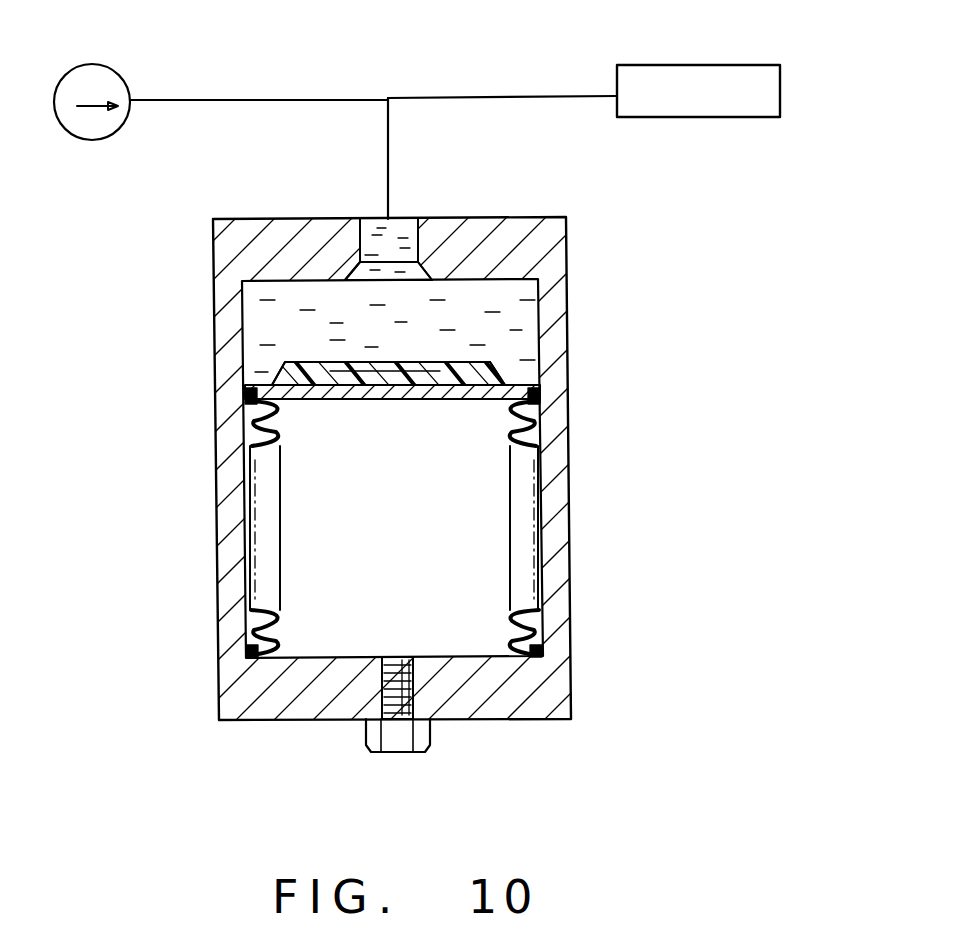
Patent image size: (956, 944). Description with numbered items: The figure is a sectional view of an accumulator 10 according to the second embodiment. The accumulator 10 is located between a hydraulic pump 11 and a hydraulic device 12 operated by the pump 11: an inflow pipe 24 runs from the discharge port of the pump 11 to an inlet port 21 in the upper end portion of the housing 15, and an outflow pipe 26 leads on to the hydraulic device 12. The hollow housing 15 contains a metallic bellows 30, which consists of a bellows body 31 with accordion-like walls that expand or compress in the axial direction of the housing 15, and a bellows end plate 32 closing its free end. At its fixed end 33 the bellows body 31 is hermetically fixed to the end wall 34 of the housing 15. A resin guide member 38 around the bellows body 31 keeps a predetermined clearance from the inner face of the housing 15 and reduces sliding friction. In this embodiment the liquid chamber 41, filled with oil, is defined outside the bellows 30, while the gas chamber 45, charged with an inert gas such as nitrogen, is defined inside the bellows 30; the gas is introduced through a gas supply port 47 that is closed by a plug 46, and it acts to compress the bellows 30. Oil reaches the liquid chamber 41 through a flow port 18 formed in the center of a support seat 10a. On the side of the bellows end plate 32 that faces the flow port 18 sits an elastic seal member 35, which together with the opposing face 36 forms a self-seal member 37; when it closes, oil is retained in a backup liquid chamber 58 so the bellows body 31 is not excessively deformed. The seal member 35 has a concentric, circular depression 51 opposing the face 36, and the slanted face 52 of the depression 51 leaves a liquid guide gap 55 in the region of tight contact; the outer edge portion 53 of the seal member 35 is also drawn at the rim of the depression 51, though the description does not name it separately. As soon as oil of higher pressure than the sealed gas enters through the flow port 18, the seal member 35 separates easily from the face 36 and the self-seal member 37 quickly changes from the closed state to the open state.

The accumulator 10 is at (624, 280).
The support seat 10a is at (484, 240).
The hydraulic pump 11 is at (125, 78).
The hydraulic device 12 is at (685, 64).
The housing 15 is at (552, 527).
The flow port 18 is at (406, 274).
The inlet port 21 is at (411, 218).
The inflow pipe 24 is at (296, 98).
The outflow pipe 26 is at (531, 96).
The metallic bellows 30 is at (546, 435).
The bellows body 31 is at (512, 432).
The bellows end plate 32 is at (367, 400).
The fixed end 33 is at (516, 650).
The end wall 34 is at (518, 672).
The elastic seal member 35 is at (476, 400).
The face 36 is at (307, 282).
The self-seal member 37 is at (268, 358).
The guide member 38 is at (250, 396).
The liquid chamber 41 is at (253, 317).
The gas chamber 45 is at (305, 549).
The plug 46 is at (402, 740).
The gas supply port 47 is at (392, 657).
The depression 51 is at (380, 362).
The slanted face 52 is at (340, 356).
The disc edge 53 is at (496, 356).
The liquid guide gap 55 is at (427, 386).
The backup liquid chamber 58 is at (246, 436).